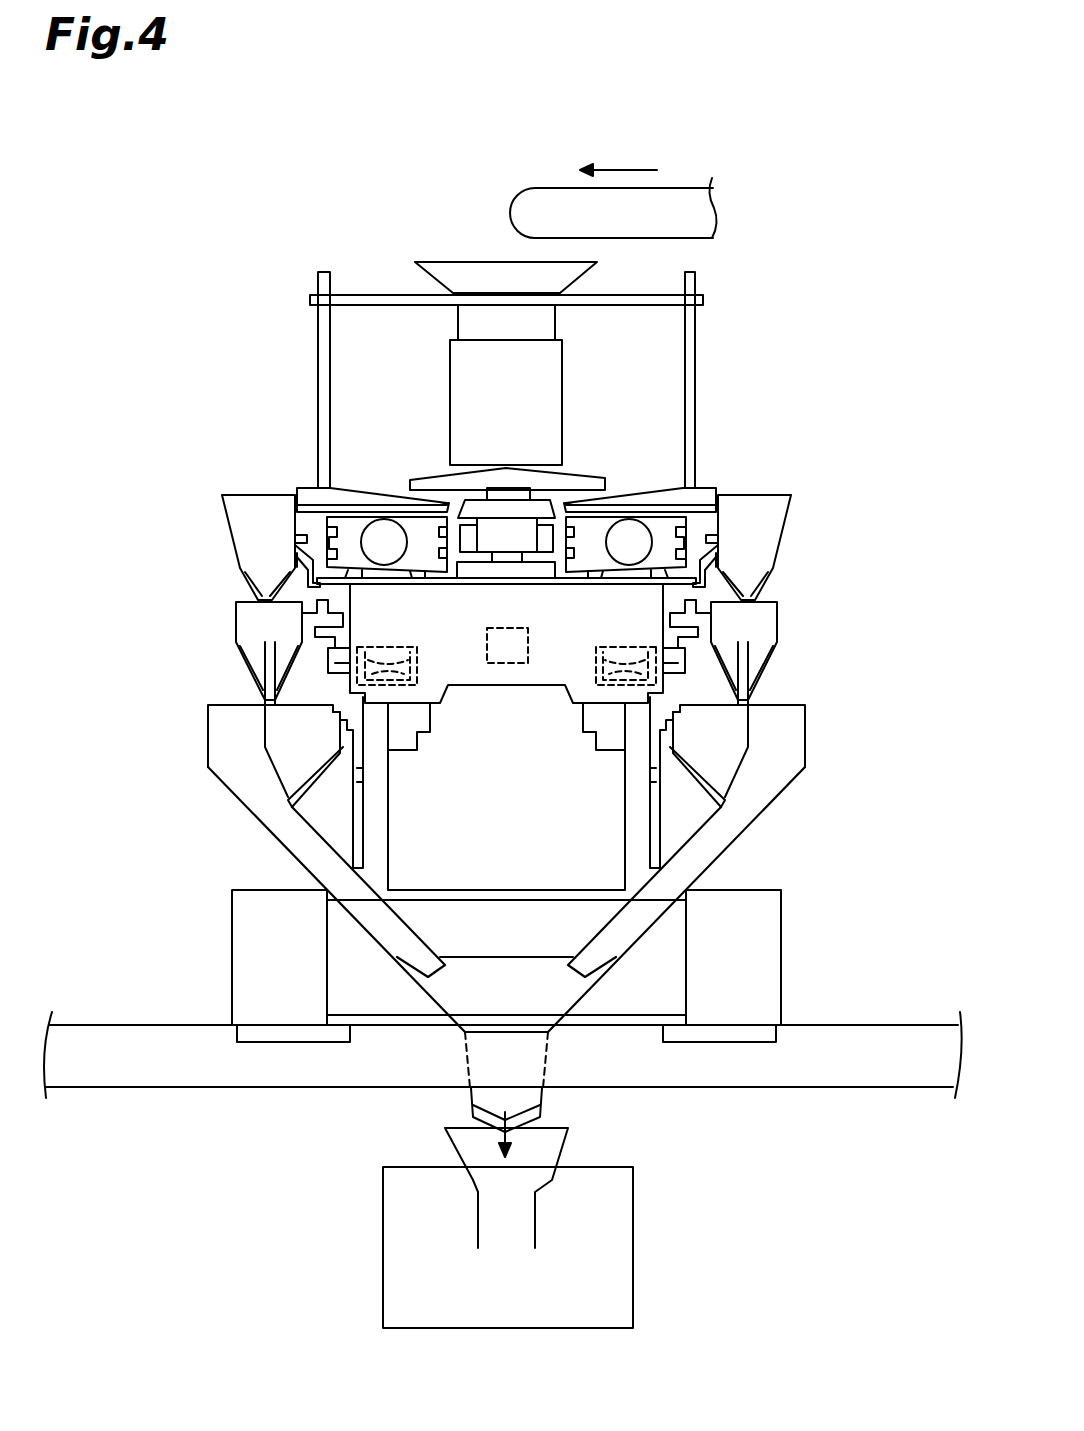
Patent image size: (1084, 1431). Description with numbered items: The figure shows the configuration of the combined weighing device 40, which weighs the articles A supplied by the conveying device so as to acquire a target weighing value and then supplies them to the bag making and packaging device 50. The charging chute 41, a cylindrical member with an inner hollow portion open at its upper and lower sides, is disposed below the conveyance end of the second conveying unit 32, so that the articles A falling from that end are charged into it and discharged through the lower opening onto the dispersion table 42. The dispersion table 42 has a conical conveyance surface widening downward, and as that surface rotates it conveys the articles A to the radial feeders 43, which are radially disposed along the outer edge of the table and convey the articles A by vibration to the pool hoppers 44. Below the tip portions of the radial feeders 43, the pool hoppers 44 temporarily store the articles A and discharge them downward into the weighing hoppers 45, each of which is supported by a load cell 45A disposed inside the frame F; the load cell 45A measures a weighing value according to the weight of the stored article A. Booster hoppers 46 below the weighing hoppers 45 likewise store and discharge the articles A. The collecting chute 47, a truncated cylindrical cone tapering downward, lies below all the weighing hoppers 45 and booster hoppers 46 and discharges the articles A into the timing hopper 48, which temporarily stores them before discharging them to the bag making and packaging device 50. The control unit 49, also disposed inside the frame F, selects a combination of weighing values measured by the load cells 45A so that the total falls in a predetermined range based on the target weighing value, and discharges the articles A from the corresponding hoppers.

The second conveying unit 32 is at (678, 195).
The articles A is at (489, 236).
The combined weighing device 40 is at (257, 166).
The charging chute 41 is at (453, 268).
The dispersion table 42 is at (583, 478).
The radial feeders 43 is at (718, 491).
The pool hoppers 44 is at (827, 520).
The weighing hoppers 45 is at (818, 618).
The load cell 45A is at (604, 647).
The booster hoppers 46 is at (848, 733).
The collecting chute 47 is at (257, 805).
The timing hopper 48 is at (530, 1093).
The control unit 49 is at (500, 665).
The frame F is at (515, 672).
The bag making and packaging device 50 is at (620, 1230).